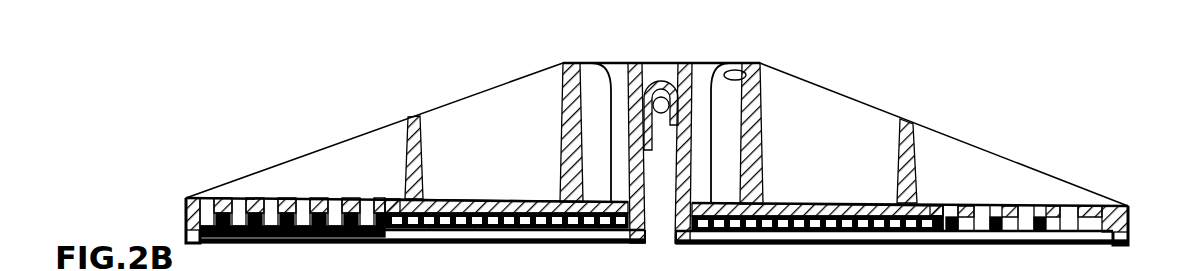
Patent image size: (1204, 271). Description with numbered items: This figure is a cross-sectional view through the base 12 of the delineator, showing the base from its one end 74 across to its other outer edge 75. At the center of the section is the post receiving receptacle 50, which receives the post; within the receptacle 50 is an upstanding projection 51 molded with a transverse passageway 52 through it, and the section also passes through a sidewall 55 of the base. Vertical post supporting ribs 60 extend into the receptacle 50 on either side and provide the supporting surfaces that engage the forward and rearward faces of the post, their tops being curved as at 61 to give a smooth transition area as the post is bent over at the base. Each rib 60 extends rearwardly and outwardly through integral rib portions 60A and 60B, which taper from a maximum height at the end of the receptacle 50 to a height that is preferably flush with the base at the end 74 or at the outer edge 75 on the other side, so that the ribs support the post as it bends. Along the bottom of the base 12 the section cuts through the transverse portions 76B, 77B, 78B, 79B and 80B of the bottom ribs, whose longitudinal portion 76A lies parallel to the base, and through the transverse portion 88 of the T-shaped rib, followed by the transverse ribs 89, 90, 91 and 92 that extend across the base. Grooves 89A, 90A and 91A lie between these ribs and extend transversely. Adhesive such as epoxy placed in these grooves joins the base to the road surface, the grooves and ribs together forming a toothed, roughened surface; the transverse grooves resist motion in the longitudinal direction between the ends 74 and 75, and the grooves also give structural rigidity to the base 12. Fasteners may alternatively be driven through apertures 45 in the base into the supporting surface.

The base 12 is at (1097, 134).
The apertures 45 is at (226, 198).
The post receiving receptacle 50 is at (703, 84).
The upstanding projection 51 is at (800, 83).
The transverse passageway 52 is at (667, 113).
The sidewall 55 is at (675, 270).
The vertical post supporting ribs 60 is at (590, 133).
The integral rib portion 60A is at (473, 110).
The integral rib portion 60B is at (328, 157).
The curved tops of the ribs 61 is at (580, 87).
The end of the base 74 is at (180, 203).
The outer edge of the base 75 is at (1133, 222).
The longitudinal rib portion 76A is at (498, 242).
The transverse rib portion 76B is at (498, 242).
The transverse rib portion 77B is at (813, 263).
The transverse rib portion 78B is at (511, 242).
The transverse rib portion 79B is at (511, 242).
The transverse rib portion 80B is at (415, 270).
The transverse portion of T-shaped rib 88 is at (385, 200).
The transverse rib 89 is at (347, 200).
The groove 89A is at (355, 232).
The transverse rib 90 is at (317, 200).
The groove 90A is at (333, 200).
The transverse rib 91 is at (271, 200).
The groove 91A is at (285, 200).
The transverse rib 92 is at (245, 226).